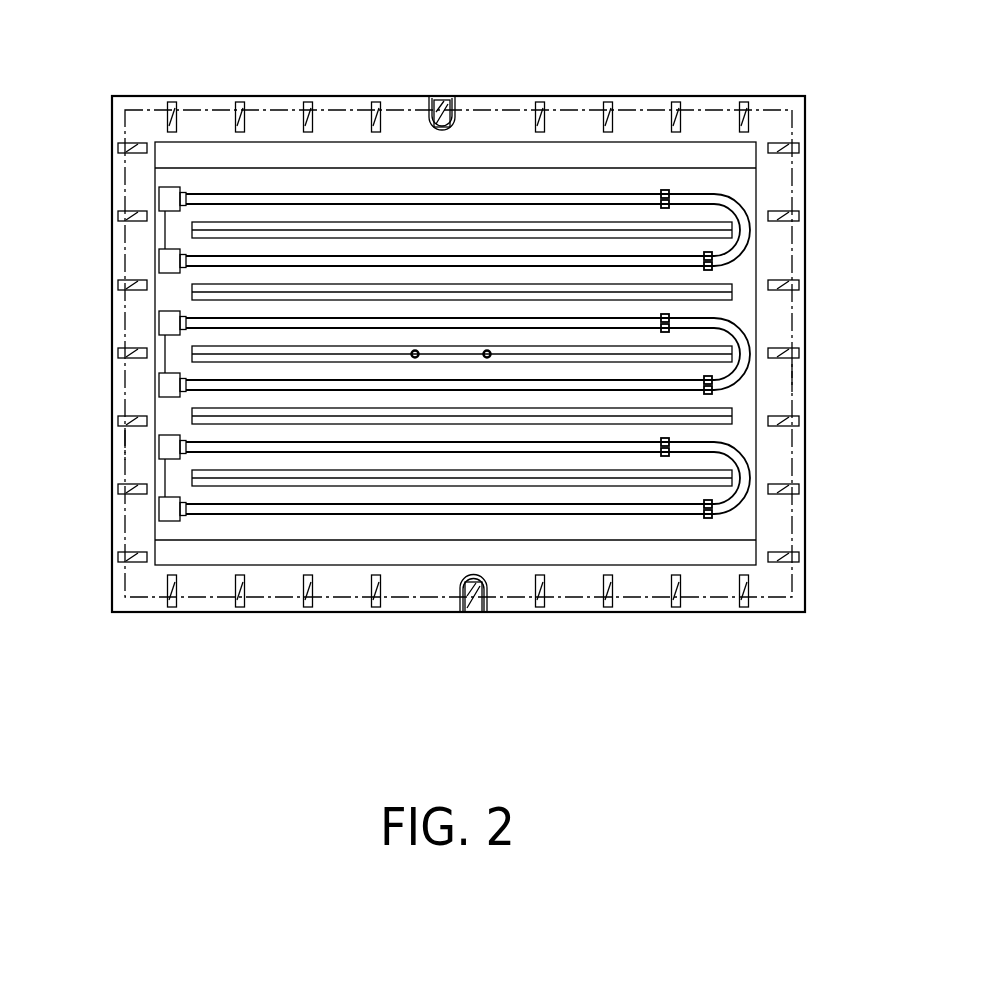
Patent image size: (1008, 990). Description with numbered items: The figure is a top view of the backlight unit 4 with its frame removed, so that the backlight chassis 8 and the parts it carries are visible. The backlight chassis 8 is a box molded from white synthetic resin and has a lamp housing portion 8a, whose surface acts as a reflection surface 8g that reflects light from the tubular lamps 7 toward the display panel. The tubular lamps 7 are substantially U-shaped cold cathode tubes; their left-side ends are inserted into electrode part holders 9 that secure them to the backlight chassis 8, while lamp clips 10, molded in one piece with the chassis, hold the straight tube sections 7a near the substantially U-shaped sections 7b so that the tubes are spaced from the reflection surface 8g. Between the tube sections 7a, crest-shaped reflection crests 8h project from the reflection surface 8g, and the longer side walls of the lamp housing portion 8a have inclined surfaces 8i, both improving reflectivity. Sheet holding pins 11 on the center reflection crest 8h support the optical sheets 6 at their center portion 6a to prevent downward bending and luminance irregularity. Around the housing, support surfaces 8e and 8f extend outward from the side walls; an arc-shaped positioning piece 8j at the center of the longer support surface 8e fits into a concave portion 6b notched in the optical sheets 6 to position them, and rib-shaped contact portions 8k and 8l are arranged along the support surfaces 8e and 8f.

The backlight unit 4 is at (458, 431).
The optical sheets 6 is at (118, 243).
The center portion of the optical sheets 6a is at (452, 370).
The concave portion 6b is at (453, 127).
The tubular lamps 7 is at (524, 276).
The tube sections 7a is at (399, 190).
The substantially U-shaped sections 7b is at (752, 228).
The backlight chassis 8 is at (655, 616).
The lamp housing portion 8a is at (518, 308).
The support surface 8e is at (570, 105).
The support surface 8f is at (122, 445).
The reflection surface 8g is at (192, 292).
The reflection crests 8h is at (192, 352).
The inclined surfaces 8i is at (230, 152).
The positioning piece 8j is at (444, 108).
The contact portions 8k is at (608, 100).
The contact portions 8l is at (118, 490).
The electrode part holders 9 is at (172, 201).
The lamp clips 10 is at (665, 190).
The sheet holding pins 11 is at (415, 360).